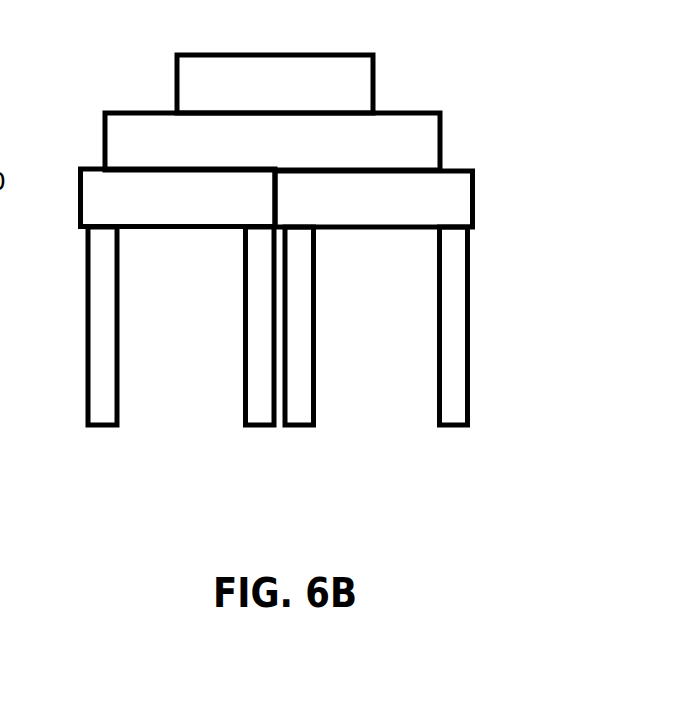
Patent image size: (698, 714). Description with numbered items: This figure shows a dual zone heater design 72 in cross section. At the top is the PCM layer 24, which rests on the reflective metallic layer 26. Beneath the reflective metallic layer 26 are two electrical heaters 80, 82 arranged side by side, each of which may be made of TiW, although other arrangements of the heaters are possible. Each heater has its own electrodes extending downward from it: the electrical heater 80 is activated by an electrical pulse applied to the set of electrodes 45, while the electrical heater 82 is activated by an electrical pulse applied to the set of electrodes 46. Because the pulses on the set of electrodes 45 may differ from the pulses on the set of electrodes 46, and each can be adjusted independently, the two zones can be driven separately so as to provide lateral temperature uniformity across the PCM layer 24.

The PCM layer 24 is at (345, 70).
The reflective metallic layer 26 is at (398, 145).
The dual zone heater design 72 is at (473, 193).
The electrical heater 80 is at (95, 200).
The electrical heater 82 is at (437, 202).
The set of electrodes 45 is at (102, 352).
The set of electrodes 46 is at (298, 365).